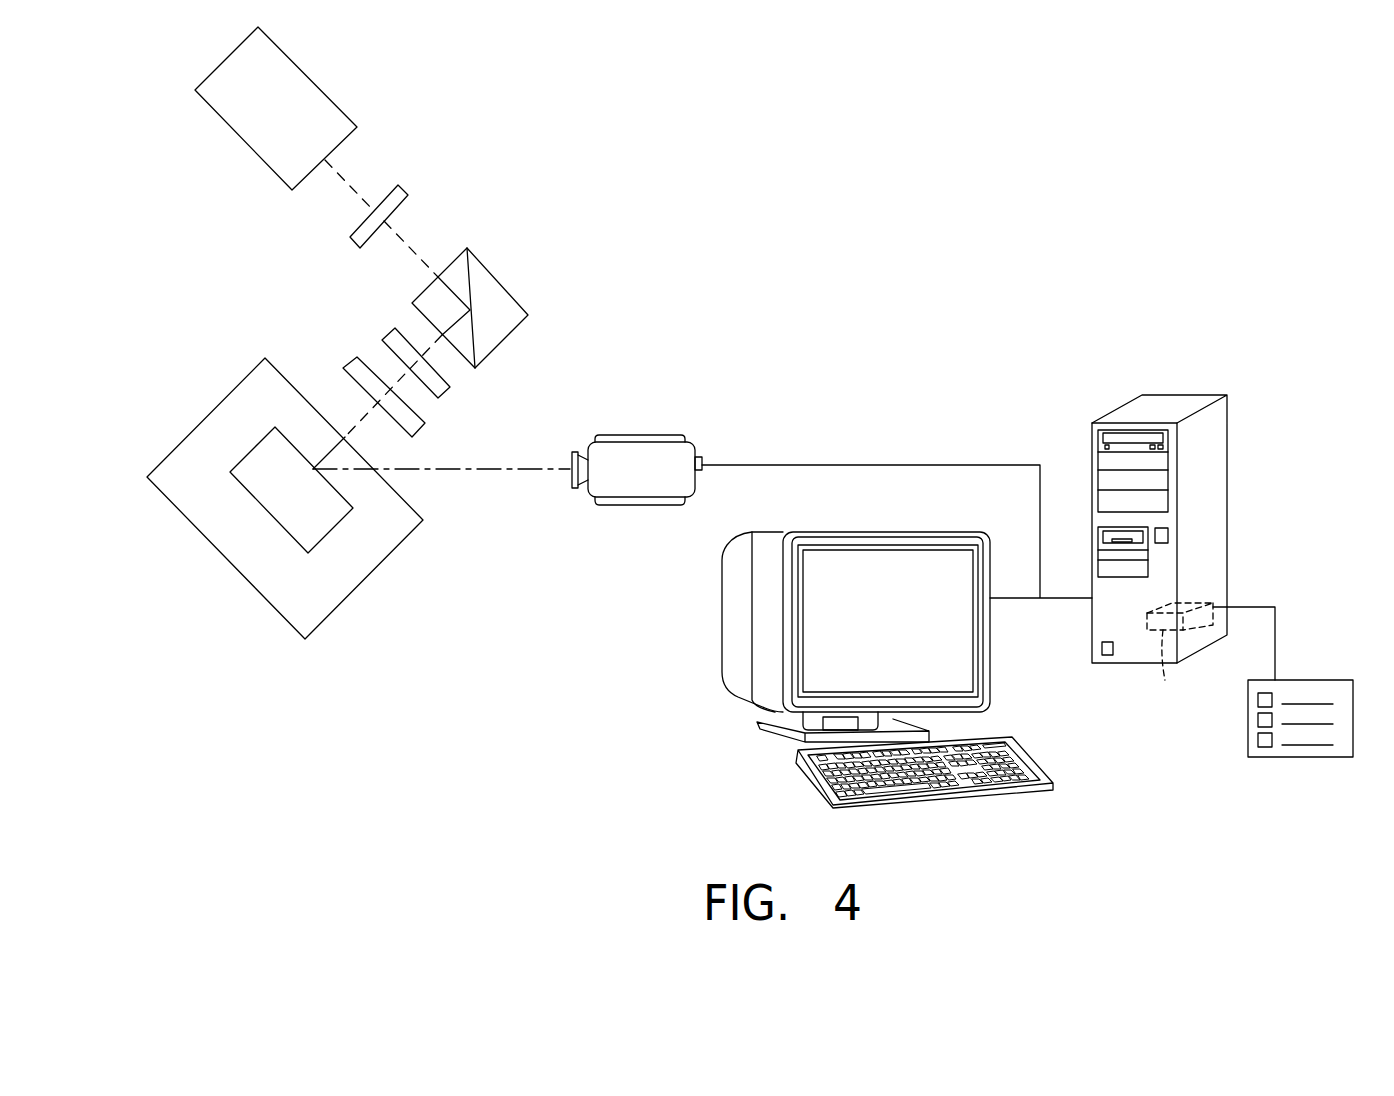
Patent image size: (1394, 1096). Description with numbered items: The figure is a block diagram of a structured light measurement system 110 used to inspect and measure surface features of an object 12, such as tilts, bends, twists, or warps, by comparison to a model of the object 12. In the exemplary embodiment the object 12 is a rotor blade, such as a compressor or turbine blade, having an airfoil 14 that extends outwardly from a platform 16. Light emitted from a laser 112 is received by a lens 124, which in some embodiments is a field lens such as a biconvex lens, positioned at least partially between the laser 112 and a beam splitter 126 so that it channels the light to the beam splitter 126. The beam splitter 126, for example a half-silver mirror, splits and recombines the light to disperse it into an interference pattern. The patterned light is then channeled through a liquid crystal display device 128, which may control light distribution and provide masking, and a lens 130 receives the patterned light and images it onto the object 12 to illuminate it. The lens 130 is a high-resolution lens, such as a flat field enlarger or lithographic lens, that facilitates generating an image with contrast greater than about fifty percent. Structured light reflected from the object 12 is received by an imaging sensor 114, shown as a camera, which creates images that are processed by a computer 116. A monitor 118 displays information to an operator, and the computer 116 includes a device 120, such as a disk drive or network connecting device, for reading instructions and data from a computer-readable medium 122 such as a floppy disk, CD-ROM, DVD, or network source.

The object 12 is at (247, 343).
The airfoil 14 is at (322, 517).
The platform 16 is at (318, 607).
The structured light measurement system 110 is at (780, 178).
The laser 112 is at (240, 138).
The imaging sensor 114 is at (640, 435).
The computer 116 is at (1117, 408).
The monitor 118 is at (722, 617).
The device 120 is at (1165, 680).
The computer-readable medium 122 is at (1313, 680).
The lens 124 is at (398, 185).
The beam splitter 126 is at (518, 330).
The liquid crystal display (LCD) device 128 is at (447, 397).
The lens 130 is at (417, 433).